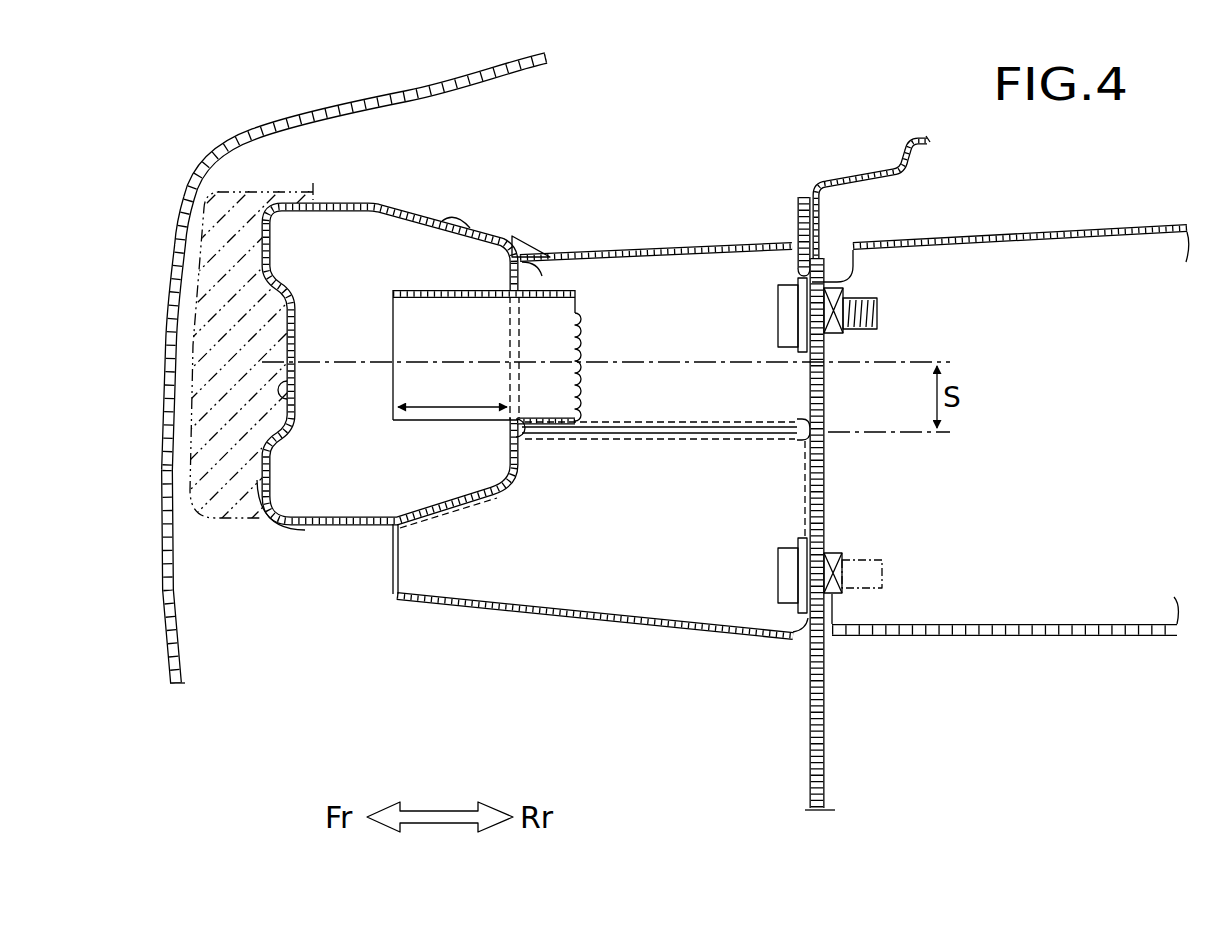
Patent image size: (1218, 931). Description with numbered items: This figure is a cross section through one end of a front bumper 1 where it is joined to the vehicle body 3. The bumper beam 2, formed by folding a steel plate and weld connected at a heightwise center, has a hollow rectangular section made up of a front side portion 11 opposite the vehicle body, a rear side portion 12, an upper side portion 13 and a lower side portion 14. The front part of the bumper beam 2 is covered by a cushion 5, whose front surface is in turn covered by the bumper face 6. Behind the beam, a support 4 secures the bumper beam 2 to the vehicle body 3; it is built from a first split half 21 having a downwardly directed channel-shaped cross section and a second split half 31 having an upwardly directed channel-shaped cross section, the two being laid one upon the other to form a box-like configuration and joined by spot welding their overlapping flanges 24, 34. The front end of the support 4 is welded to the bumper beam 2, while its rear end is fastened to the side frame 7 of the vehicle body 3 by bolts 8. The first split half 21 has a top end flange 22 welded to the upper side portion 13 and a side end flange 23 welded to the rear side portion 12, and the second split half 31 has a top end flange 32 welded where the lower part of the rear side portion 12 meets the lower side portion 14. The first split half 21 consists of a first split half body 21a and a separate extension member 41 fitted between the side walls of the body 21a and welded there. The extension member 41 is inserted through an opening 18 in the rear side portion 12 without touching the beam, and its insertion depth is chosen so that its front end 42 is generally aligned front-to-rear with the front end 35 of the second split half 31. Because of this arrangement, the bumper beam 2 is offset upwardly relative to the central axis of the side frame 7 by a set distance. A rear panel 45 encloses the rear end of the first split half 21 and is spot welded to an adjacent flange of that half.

The bumper 1 is at (172, 148).
The bumper beam 2 is at (417, 380).
The vehicle body 3 is at (805, 777).
The support 4 is at (718, 226).
The cushion 5 is at (165, 402).
The bumper face 6 is at (163, 576).
The side frame 7 is at (1080, 223).
The bolt 8 is at (778, 320).
The front side portion 11 is at (290, 398).
The rear side portion 12 is at (520, 455).
The upper side portion 13 is at (368, 201).
The lower side portion 14 is at (333, 527).
The opening 18 is at (510, 428).
The first split half 21 is at (656, 182).
The first split half body 21a is at (681, 243).
The top end flange 22 is at (462, 213).
The side end flange 23 is at (524, 275).
The flange 24 is at (650, 423).
The second split half 31 is at (577, 604).
The top end flange 32 is at (447, 522).
The flange 34 is at (657, 437).
The front end 35 is at (393, 575).
The extension member 41 is at (455, 327).
The front end 42 is at (393, 318).
The rear panel 45 is at (803, 195).